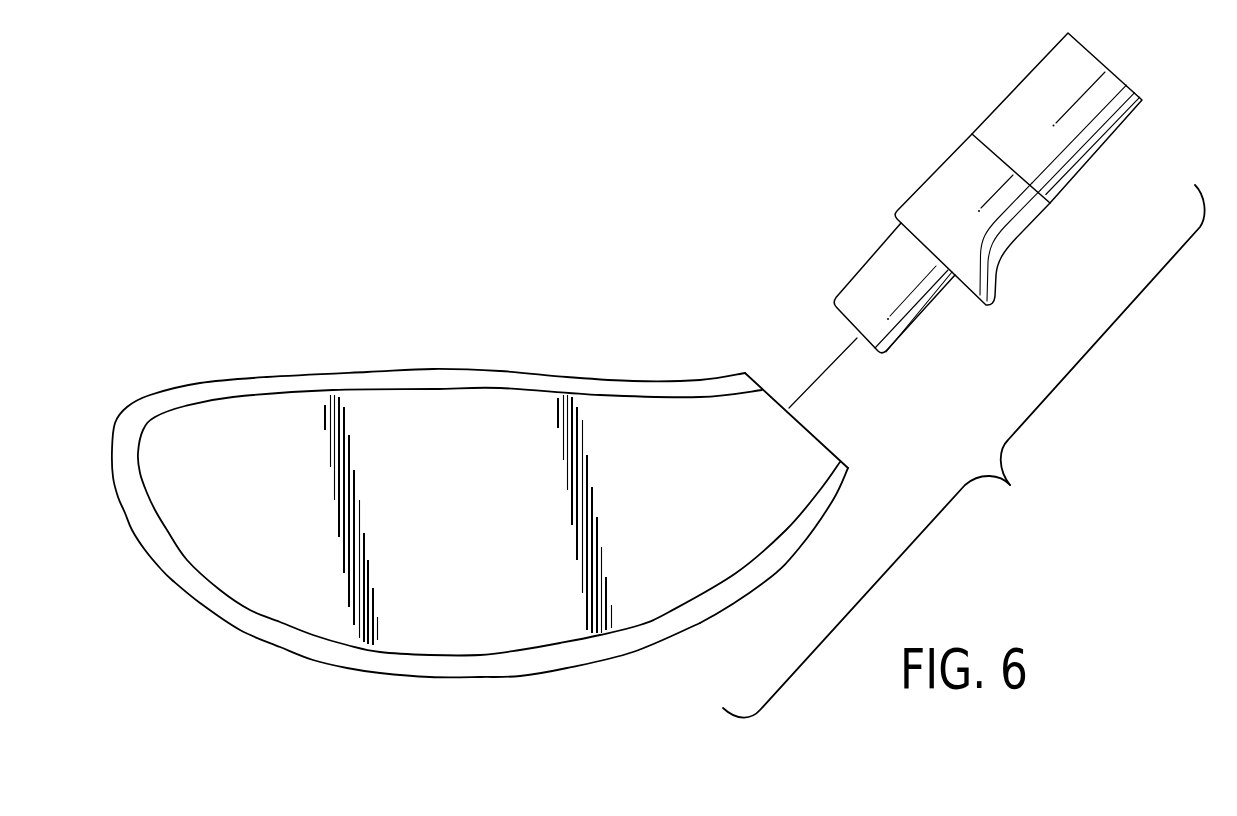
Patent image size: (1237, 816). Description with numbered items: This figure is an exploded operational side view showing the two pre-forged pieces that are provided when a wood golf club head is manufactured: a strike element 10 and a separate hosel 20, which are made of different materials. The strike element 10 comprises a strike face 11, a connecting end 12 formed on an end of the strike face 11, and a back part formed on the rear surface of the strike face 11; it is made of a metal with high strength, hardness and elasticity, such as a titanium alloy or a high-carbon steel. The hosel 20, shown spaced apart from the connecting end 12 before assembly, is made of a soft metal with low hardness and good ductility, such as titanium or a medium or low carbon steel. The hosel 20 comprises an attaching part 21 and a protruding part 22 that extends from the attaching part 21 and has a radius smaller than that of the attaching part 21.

The strike element 10 is at (376, 350).
The strike face 11 is at (750, 539).
The connecting end 12 is at (805, 440).
The hosel 20 is at (923, 143).
The attaching part 21 is at (987, 252).
The protruding part 22 is at (903, 315).